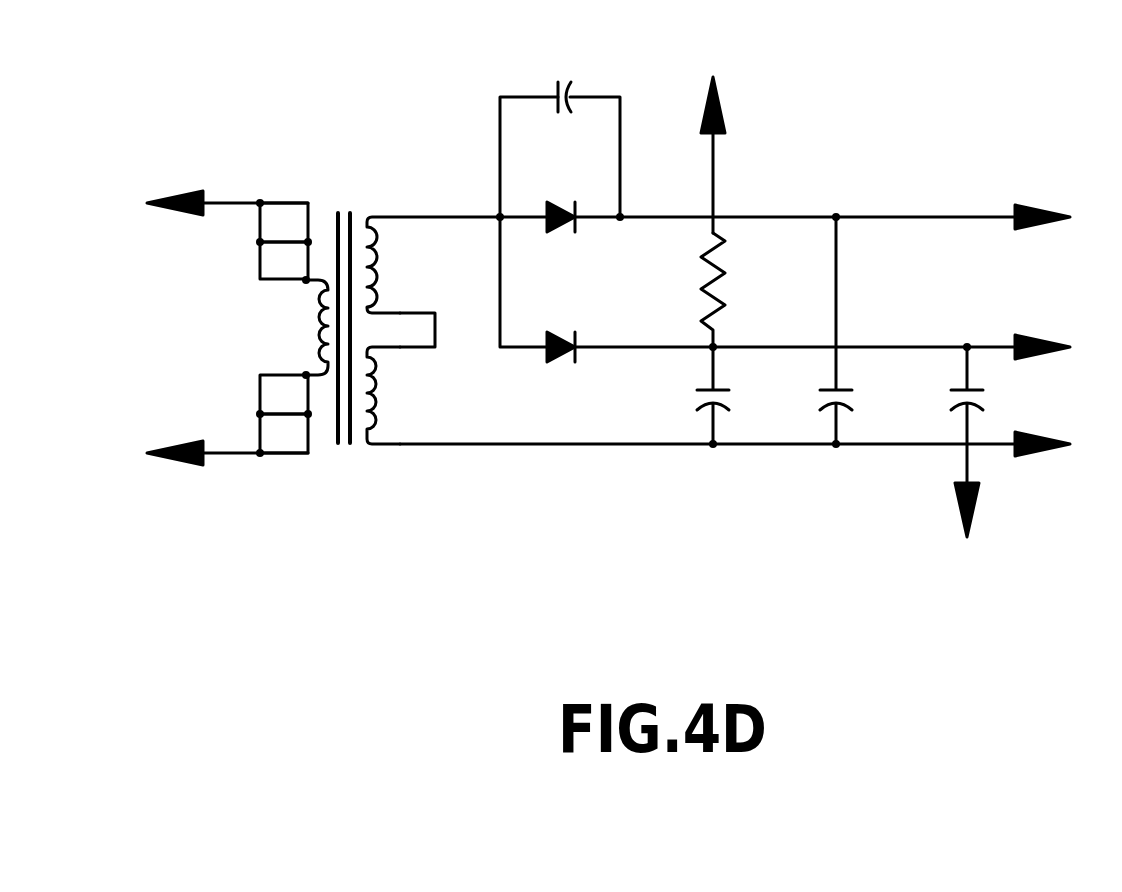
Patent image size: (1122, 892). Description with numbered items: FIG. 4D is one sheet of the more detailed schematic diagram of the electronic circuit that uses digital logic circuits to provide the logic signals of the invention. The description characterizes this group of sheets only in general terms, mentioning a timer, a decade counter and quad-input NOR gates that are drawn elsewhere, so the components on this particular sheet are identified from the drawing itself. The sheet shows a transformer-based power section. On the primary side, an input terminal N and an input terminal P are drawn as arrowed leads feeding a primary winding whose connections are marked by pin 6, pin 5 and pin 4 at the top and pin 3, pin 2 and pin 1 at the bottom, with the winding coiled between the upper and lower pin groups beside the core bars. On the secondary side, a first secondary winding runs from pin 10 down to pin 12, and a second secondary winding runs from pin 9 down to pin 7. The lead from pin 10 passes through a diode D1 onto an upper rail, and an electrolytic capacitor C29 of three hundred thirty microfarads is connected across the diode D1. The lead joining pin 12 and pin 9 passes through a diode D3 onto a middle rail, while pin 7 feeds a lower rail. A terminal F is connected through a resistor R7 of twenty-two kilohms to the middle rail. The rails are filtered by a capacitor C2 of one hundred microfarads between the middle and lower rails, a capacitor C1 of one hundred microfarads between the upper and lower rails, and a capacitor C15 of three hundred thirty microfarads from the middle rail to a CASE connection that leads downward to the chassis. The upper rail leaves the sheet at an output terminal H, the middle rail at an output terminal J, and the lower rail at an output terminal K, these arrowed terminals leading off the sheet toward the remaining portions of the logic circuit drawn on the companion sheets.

The N input terminal N is at (186, 203).
The P input terminal P is at (187, 456).
The transformer pin 6 is at (282, 187).
The transformer pin 5 is at (284, 224).
The transformer pin 4 is at (285, 263).
The transformer pin 3 is at (284, 394).
The transformer pin 2 is at (284, 434).
The transformer pin 1 is at (282, 470).
The transformer secondary pin 10 winding 10 is at (433, 245).
The transformer secondary pin 12 tap 12 is at (412, 311).
The transformer secondary pin 9 winding 9 is at (388, 395).
The transformer secondary pin 7 is at (548, 464).
The capacitor C29 330 microfarad C29 is at (560, 149).
The diode D1 is at (562, 239).
The diode D3 is at (562, 369).
The F output terminal F is at (712, 134).
The resistor R7 22k R7 is at (681, 290).
The capacitor C2 100 microfarad C2 is at (673, 395).
The capacitor C1 100 microfarad C1 is at (797, 330).
The capacitor C15 330 microfarad C15 is at (927, 415).
The case ground terminal CASE is at (968, 531).
The H output terminal H is at (1061, 219).
The J output terminal J is at (1054, 349).
The K output terminal K is at (1061, 446).